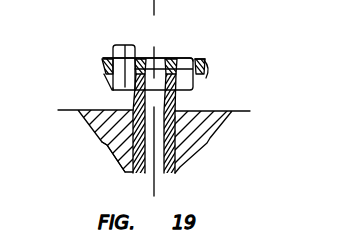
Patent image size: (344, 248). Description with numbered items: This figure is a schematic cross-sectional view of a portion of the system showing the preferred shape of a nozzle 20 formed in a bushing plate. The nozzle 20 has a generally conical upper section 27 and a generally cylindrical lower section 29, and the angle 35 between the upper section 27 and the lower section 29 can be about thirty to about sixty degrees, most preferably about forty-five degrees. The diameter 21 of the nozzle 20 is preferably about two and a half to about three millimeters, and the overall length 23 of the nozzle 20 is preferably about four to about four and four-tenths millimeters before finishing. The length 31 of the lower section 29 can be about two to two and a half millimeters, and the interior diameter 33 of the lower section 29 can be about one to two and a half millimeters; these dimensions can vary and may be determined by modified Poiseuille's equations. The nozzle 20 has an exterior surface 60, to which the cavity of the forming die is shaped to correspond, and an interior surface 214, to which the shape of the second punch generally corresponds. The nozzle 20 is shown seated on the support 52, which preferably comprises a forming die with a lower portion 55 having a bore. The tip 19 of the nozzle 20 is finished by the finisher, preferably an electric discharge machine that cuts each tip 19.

The tip 19 is at (105, 131).
The nozzle 20 is at (108, 59).
The diameter 21 is at (125, 43).
The overall length 23 is at (233, 58).
The upper section 27 is at (111, 68).
The lower section 29 is at (111, 92).
The length 31 is at (212, 73).
The interior diameter 33 is at (186, 92).
The angle 35 is at (107, 61).
The support 52 is at (193, 157).
The lower portion 55 is at (116, 160).
The exterior surface 60 is at (114, 78).
The interior surface 214 is at (193, 58).